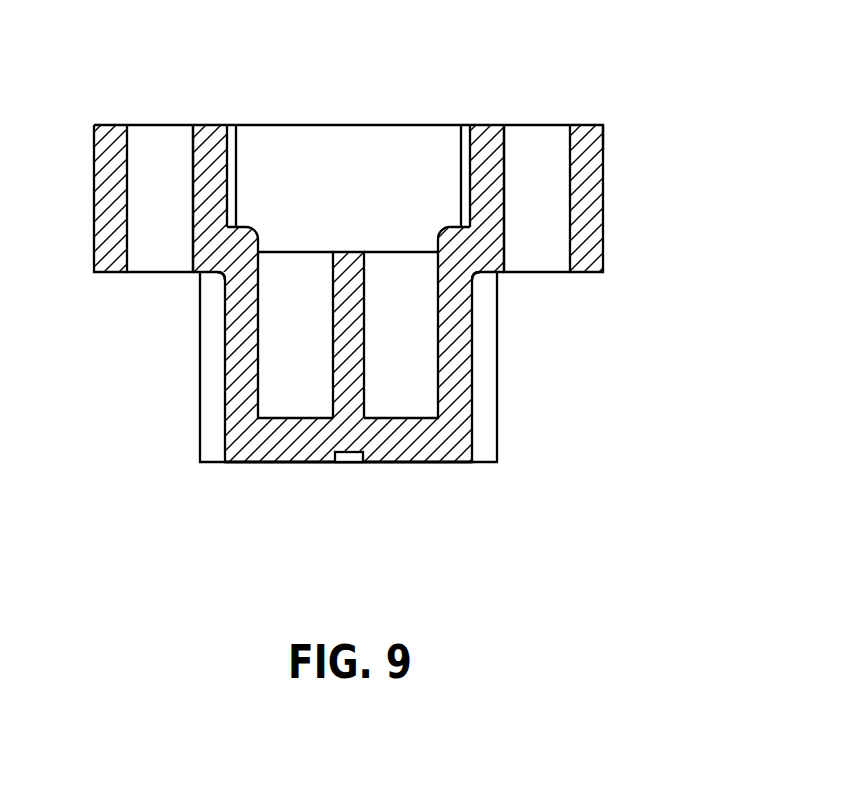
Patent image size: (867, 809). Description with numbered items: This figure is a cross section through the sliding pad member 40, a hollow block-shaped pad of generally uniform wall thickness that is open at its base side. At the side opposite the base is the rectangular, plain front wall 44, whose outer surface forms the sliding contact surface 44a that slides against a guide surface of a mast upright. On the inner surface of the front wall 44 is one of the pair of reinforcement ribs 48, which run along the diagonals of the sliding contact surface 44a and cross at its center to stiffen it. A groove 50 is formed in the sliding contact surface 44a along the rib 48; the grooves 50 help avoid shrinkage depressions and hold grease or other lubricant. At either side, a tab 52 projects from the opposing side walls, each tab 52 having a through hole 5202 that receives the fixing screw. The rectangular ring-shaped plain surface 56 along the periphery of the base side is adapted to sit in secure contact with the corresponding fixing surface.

The sliding pad member 40 is at (520, 432).
The front wall 44 is at (440, 440).
The sliding contact surface 44a is at (240, 463).
The reinforcement ribs 48 is at (332, 322).
The grooves 50 is at (348, 463).
The tabs 52 is at (680, 185).
The through hole 5202 is at (595, 313).
The plain surface 56 is at (582, 125).